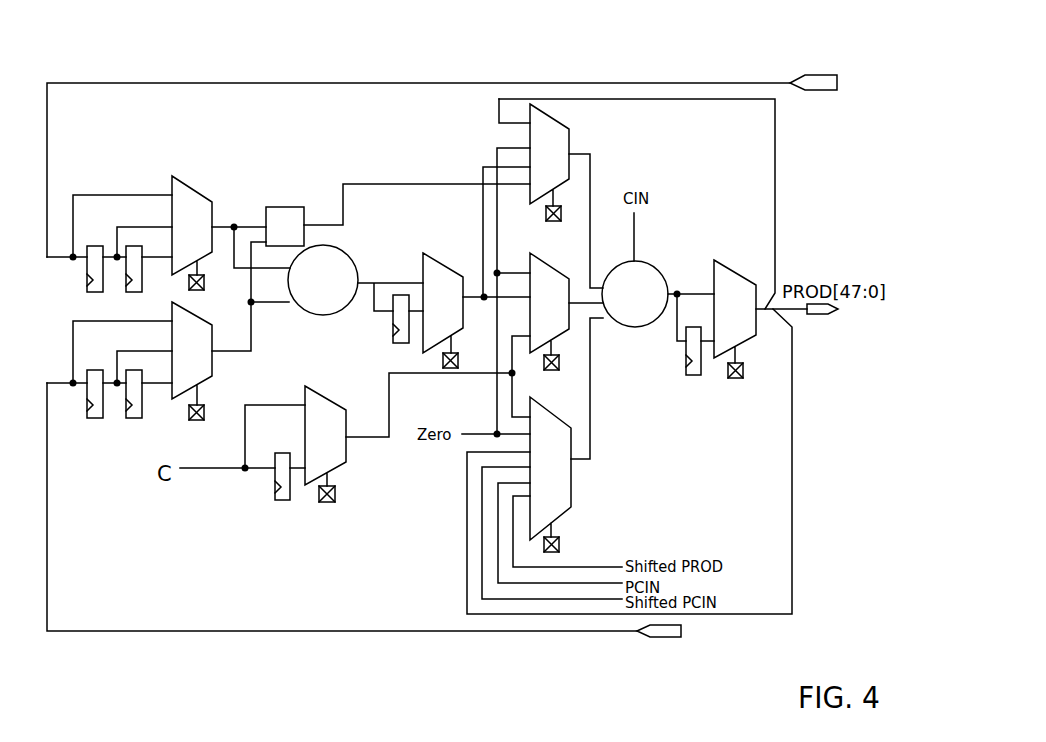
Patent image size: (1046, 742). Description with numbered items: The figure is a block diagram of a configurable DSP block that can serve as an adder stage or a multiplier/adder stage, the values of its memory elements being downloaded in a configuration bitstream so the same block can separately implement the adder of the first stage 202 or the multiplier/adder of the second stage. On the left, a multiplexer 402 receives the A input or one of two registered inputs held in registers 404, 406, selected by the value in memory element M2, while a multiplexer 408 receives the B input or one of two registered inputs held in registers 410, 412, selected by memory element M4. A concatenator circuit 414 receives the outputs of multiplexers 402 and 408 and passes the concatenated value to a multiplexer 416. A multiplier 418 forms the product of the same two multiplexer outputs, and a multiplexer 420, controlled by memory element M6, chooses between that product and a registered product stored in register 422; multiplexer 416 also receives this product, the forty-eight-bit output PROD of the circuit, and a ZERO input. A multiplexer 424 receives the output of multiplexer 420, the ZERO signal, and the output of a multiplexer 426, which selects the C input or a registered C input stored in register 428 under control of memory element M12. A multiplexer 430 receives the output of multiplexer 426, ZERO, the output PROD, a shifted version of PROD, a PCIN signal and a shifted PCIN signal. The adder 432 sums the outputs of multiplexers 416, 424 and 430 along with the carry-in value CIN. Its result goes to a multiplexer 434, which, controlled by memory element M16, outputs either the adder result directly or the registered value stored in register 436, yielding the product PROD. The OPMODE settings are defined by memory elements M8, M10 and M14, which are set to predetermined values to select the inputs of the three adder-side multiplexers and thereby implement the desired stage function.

The first stage 202 is at (140, 615).
The multiplexer 402 is at (204, 194).
The register 404 is at (87, 265).
The register 406 is at (142, 282).
The multiplexer 408 is at (230, 320).
The register 410 is at (87, 418).
The register 412 is at (126, 418).
The concatenator circuit 414 is at (283, 207).
The multiplexer 416 is at (569, 145).
The multiplier 418 is at (352, 262).
The multiplexer 420 is at (440, 262).
The register 422 is at (393, 328).
The multiplexer 424 is at (530, 253).
The multiplexer 426 is at (340, 405).
The register 428 is at (275, 500).
The multiplexer 430 is at (571, 468).
The adder 432 is at (652, 265).
The multiplexer 434 is at (718, 262).
The register 436 is at (690, 376).
The memory element M2 is at (210, 284).
The memory element M4 is at (210, 412).
The memory element M6 is at (465, 363).
The memory element M8 is at (567, 213).
The memory element M10 is at (550, 372).
The memory element M12 is at (349, 494).
The memory element M14 is at (573, 543).
The memory element M16 is at (736, 384).